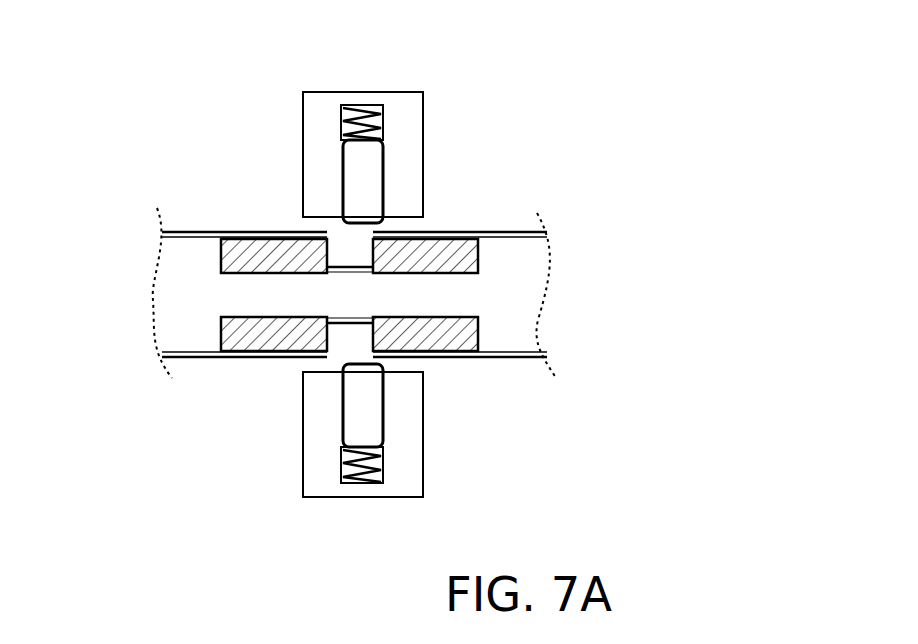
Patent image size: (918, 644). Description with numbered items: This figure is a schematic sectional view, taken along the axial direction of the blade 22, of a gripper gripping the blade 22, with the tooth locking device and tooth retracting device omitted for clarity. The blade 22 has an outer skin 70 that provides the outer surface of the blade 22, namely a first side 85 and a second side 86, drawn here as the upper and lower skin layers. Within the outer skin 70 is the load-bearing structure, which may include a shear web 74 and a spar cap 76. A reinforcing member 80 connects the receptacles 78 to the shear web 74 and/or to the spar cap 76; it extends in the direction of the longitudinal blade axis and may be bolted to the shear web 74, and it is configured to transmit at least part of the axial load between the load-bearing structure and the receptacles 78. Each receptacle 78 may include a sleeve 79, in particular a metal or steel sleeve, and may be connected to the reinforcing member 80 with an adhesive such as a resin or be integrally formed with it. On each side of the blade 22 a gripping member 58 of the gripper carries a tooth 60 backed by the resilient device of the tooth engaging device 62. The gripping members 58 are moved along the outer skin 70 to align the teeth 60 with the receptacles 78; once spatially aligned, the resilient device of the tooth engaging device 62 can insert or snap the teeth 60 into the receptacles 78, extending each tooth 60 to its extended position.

The blade 22 is at (138, 225).
The gripping member 58 is at (440, 84).
The tooth 60 is at (343, 143).
The tooth engaging device 62 is at (345, 108).
The outer skin 70 is at (181, 230).
The shear web 74 is at (523, 236).
The spar cap 76 is at (494, 230).
The receptacle 78 is at (333, 226).
The sleeve 79 is at (383, 243).
The reinforcing member 80 is at (221, 255).
The first side 85 is at (246, 231).
The second side 86 is at (255, 358).